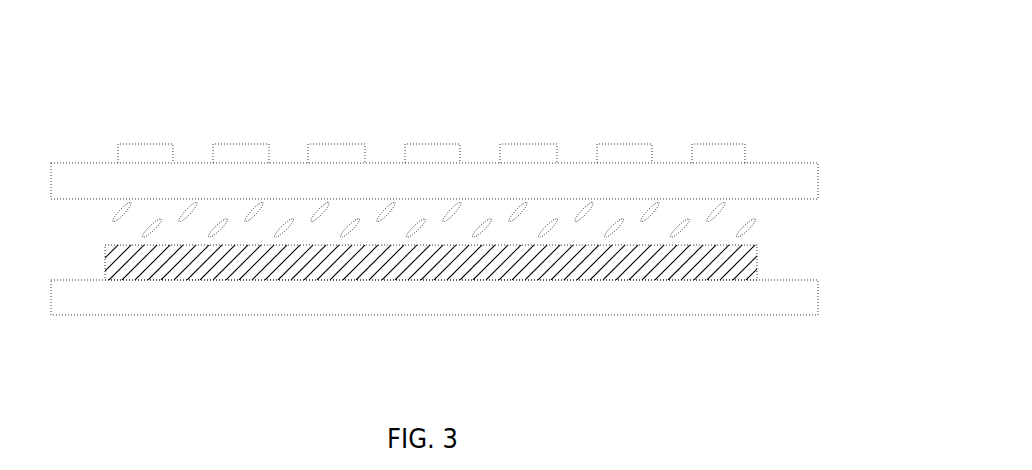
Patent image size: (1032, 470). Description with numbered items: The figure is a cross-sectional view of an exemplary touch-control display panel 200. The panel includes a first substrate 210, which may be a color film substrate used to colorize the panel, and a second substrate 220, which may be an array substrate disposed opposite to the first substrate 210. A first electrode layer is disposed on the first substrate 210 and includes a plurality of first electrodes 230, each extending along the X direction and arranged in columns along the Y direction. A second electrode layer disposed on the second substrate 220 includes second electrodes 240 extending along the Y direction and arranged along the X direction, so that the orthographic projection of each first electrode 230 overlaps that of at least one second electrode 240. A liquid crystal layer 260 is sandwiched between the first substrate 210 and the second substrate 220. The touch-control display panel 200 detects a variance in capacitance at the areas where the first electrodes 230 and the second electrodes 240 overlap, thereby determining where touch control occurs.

The touch-control display panel 200 is at (135, 60).
The first substrate 210 is at (275, 180).
The second substrate 220 is at (277, 295).
The first electrodes 230 is at (435, 155).
The second electrodes 240 is at (465, 260).
The liquid crystal layer 260 is at (754, 225).